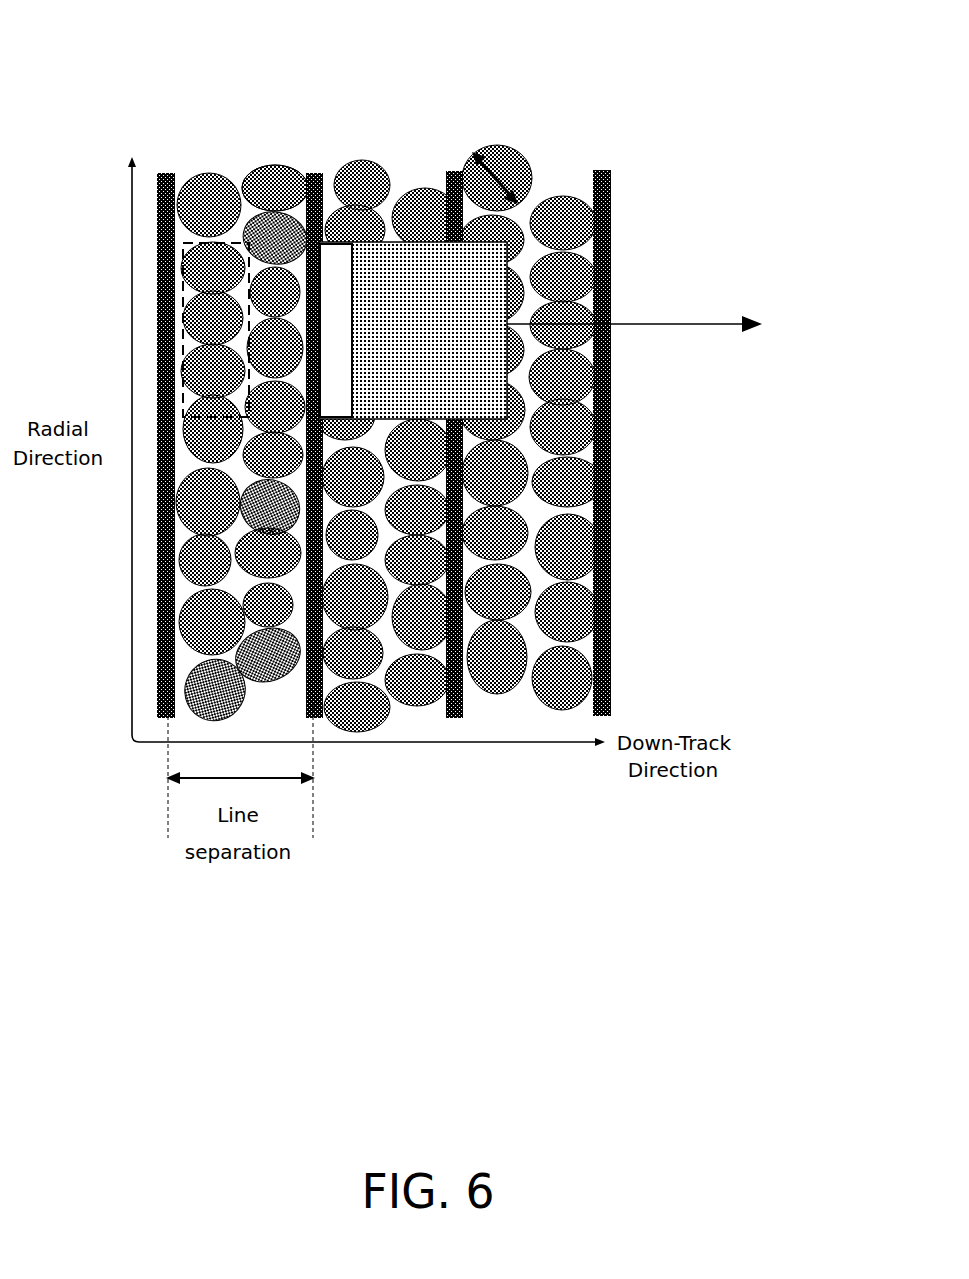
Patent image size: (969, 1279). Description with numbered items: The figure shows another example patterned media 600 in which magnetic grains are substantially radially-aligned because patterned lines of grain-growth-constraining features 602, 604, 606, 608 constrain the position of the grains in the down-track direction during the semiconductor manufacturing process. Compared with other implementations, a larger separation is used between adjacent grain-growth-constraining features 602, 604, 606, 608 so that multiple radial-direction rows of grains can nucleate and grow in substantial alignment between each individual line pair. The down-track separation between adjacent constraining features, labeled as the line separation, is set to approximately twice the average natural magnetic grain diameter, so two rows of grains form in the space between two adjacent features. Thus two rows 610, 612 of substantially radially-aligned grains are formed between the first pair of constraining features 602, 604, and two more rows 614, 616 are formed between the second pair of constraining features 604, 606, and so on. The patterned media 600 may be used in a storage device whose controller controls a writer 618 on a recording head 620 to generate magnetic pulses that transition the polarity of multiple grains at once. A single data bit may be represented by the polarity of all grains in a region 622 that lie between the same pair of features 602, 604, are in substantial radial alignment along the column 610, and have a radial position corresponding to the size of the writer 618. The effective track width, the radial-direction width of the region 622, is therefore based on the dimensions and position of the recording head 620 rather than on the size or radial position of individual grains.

The patterned media 600 is at (777, 92).
The grain-growth-constraining feature 602 is at (165, 175).
The grain-growth-constraining feature 604 is at (317, 173).
The grain-growth-constraining feature 606 is at (451, 170).
The grain-growth-constraining feature 608 is at (612, 190).
The row of magnetic grains 610 is at (202, 165).
The row of magnetic grains 612 is at (268, 167).
The row of magnetic grains 614 is at (355, 155).
The row of magnetic grains 616 is at (427, 192).
The writer 618 is at (352, 268).
The recording head 620 is at (400, 372).
The region 622 is at (185, 243).